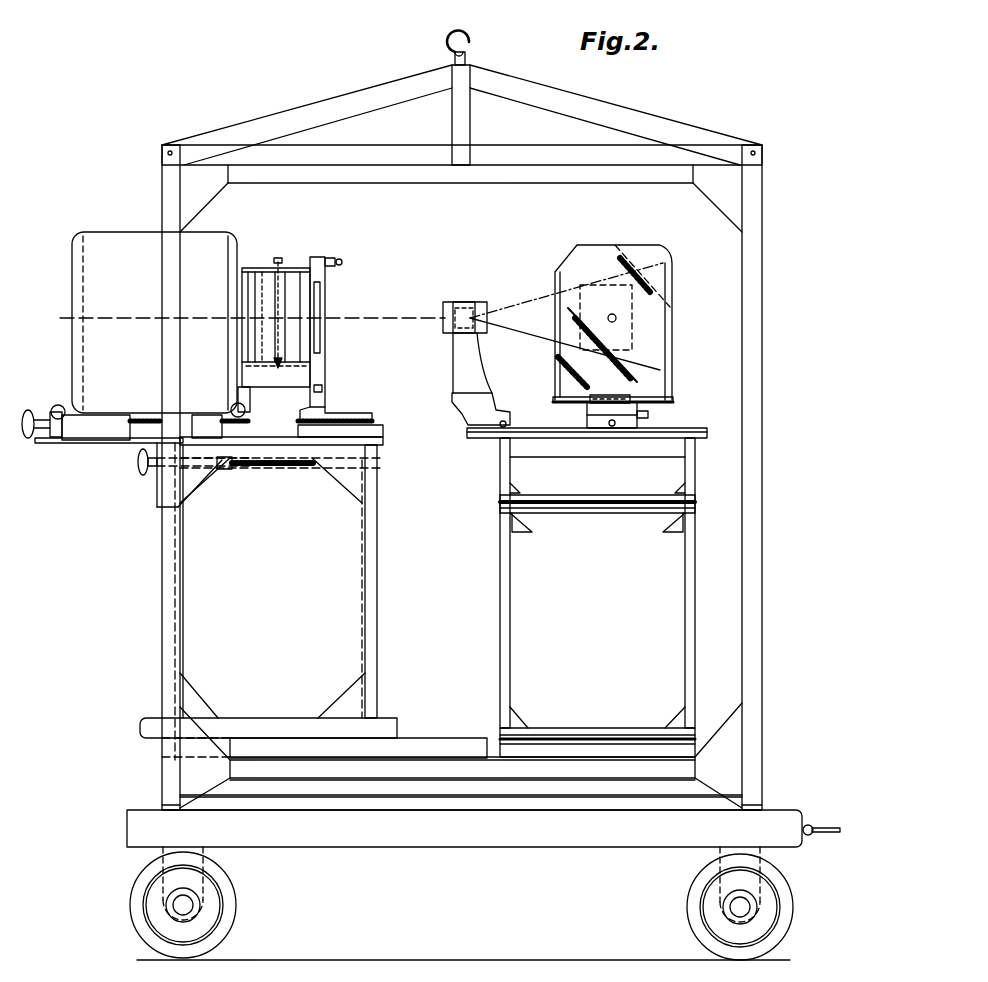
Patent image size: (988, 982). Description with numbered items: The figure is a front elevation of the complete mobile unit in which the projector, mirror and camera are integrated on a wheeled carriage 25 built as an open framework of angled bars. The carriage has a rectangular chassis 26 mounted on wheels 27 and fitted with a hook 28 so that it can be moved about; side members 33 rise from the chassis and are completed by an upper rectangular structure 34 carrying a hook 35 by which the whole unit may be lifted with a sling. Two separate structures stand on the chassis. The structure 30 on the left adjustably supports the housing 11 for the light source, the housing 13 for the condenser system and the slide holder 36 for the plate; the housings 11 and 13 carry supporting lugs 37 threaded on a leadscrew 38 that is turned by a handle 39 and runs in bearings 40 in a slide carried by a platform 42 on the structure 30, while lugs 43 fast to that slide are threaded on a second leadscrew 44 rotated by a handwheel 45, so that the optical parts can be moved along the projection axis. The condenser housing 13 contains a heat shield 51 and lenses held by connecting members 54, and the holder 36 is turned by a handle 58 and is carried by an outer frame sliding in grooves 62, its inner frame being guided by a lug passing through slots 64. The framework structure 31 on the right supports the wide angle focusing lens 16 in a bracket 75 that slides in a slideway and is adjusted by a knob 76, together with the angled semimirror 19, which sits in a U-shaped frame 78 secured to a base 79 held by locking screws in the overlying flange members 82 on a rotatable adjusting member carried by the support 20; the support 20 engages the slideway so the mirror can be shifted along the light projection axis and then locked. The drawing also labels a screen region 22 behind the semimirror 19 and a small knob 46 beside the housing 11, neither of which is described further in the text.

The housing 11 is at (120, 237).
The condenser housing 13 is at (277, 285).
The wide angle focusing lens 16 is at (478, 302).
The angled semimirror 19 is at (643, 247).
The support 20 is at (625, 428).
The screen 22 is at (672, 306).
The wheeled carriage 25 is at (767, 572).
The rectangular chassis 26 is at (338, 830).
The wheels 27 is at (140, 890).
The hook 28 is at (810, 823).
The structure 30 is at (378, 632).
The framework structure 31 is at (697, 666).
The side members 33 is at (165, 600).
The upper rectangular structure 34 is at (332, 165).
The hook 35 is at (448, 38).
The slide holder 36 is at (325, 372).
The supporting lugs 37 is at (213, 408).
The leadscrew 38 is at (371, 420).
The handle 39 is at (20, 442).
The bearings 40 is at (43, 413).
The platform 42 is at (130, 444).
The lugs 43 is at (220, 470).
The second leadscrew 44 is at (290, 468).
The handwheel 45 is at (137, 476).
The clamp knob 46 is at (62, 407).
The heat shield 51 is at (265, 272).
The connecting members 54 is at (290, 290).
The handle 58 is at (340, 262).
The grooves 62 is at (322, 390).
The slots 64 is at (320, 337).
The bracket 75 is at (481, 384).
The knob 76 is at (500, 427).
The U-shaped frame 78 is at (671, 362).
The base 79 is at (658, 403).
The flange members 82 is at (618, 392).